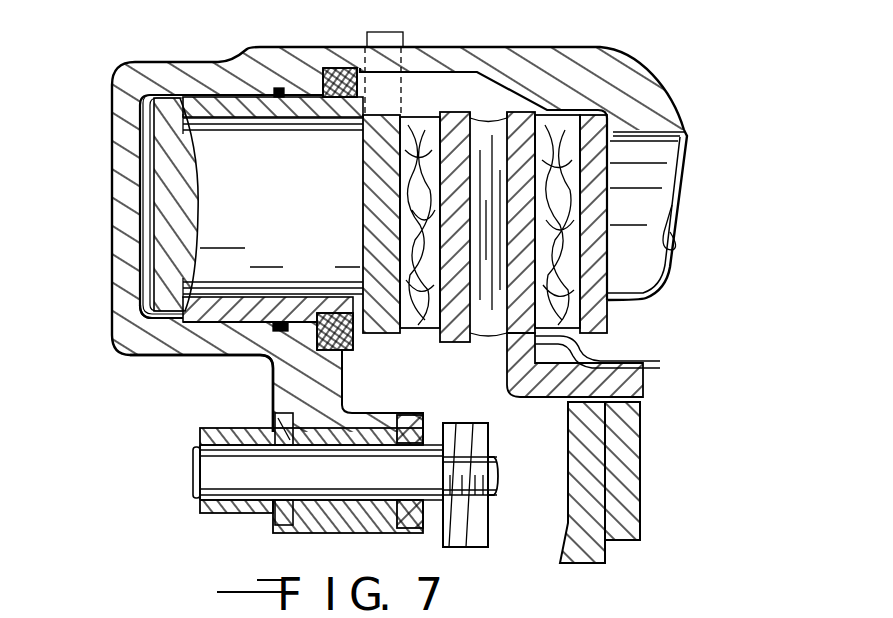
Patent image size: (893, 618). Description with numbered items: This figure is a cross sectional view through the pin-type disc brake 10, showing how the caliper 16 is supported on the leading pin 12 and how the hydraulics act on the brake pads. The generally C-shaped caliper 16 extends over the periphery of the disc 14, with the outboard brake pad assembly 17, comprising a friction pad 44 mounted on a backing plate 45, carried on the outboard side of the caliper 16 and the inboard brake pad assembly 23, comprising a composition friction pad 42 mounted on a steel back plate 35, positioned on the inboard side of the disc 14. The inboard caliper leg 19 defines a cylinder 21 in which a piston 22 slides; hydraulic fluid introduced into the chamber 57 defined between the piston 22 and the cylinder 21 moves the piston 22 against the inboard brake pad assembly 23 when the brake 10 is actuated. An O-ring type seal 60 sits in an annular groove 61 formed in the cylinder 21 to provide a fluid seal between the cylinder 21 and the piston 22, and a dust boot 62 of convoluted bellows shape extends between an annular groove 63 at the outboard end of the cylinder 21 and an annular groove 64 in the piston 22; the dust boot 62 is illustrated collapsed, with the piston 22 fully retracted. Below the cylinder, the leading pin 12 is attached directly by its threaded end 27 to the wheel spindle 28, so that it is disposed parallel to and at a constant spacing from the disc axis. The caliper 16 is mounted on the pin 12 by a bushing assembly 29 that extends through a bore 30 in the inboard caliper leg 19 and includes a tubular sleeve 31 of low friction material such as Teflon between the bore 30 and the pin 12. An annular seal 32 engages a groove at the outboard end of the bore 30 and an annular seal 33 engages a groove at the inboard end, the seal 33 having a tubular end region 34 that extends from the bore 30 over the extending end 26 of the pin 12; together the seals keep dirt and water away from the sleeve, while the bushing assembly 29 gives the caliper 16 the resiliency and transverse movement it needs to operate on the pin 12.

The disc brake 10 is at (143, 55).
The leading pin 12 is at (190, 474).
The disc 14 is at (493, 117).
The caliper 16 is at (445, 45).
The outboard brake pad assembly 17 is at (612, 312).
The inboard caliper leg 19 is at (268, 390).
The cylinder 21 is at (170, 310).
The piston 22 is at (168, 218).
The inboard brake pad assembly 23 is at (360, 211).
The extending end 26 is at (195, 503).
The threaded end 27 is at (496, 478).
The wheel spindle 28 is at (467, 423).
The bushing assembly 29 is at (235, 514).
The bore 30 is at (357, 528).
The tubular sleeve 31 is at (355, 507).
The annular seal 32 is at (413, 532).
The annular seal 33 is at (287, 528).
The tubular end region 34 is at (213, 433).
The back plate 35 is at (383, 335).
The friction pad 42 is at (426, 333).
The friction pad 44 is at (603, 353).
The backing plate 45 is at (603, 340).
The chamber 57 is at (145, 147).
The O-ring type seal 60 is at (285, 118).
The annular groove 61 is at (279, 97).
The dust boot 62 is at (360, 80).
The annular groove 63 is at (325, 70).
The annular groove 64 is at (338, 313).